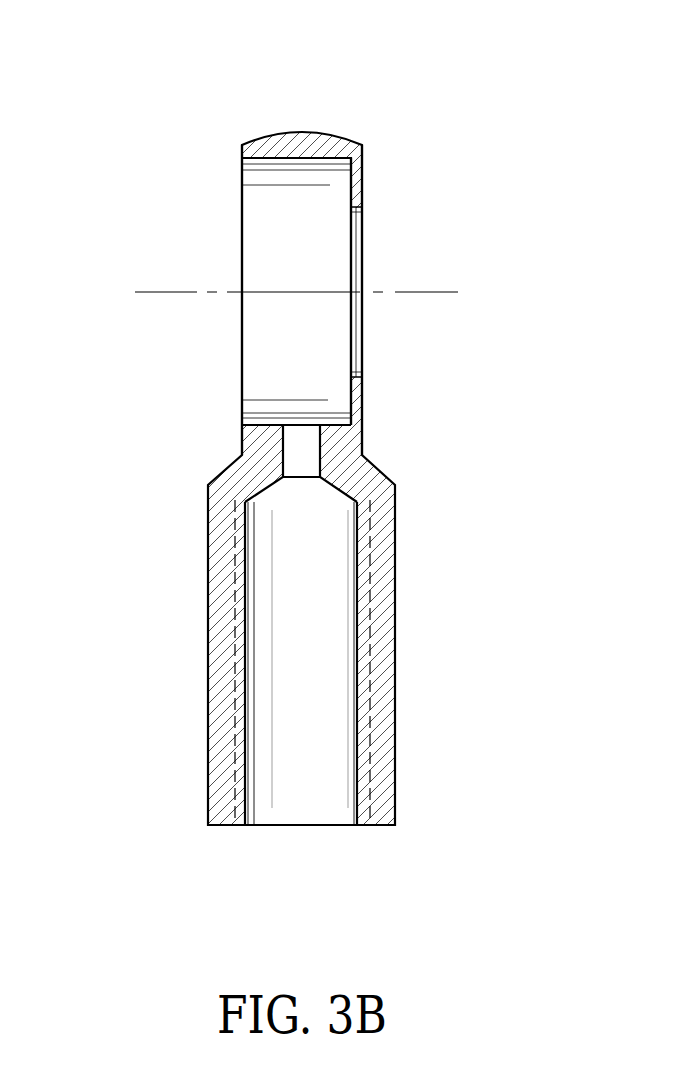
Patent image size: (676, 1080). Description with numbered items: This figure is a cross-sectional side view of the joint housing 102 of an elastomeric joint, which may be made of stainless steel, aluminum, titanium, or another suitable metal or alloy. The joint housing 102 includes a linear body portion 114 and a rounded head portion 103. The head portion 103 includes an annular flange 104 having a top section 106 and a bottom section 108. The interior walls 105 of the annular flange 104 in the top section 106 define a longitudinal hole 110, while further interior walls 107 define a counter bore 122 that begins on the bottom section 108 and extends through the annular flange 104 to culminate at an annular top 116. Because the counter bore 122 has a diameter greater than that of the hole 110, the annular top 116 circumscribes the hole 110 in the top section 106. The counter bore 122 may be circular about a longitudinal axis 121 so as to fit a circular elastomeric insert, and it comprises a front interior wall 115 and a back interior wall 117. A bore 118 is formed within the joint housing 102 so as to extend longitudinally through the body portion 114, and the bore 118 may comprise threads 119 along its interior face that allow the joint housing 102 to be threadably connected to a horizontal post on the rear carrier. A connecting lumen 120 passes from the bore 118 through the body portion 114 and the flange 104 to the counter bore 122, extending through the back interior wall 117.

The joint housing 102 is at (447, 75).
The head portion 103 is at (108, 133).
The annular flange 104 is at (290, 133).
The interior walls 105 is at (356, 214).
The top section 106 is at (363, 185).
The interior walls 107 is at (318, 160).
The bottom section 108 is at (242, 151).
The longitudinal hole 110 is at (357, 276).
The body portion 114 is at (148, 478).
The front interior wall 115 is at (285, 170).
The annular top 116 is at (351, 193).
The back interior wall 117 is at (257, 423).
The bore 118 is at (297, 811).
The threads 119 is at (364, 822).
The connecting lumen 120 is at (303, 468).
The longitudinal axis 121 is at (420, 294).
The counter bore 122 is at (268, 271).